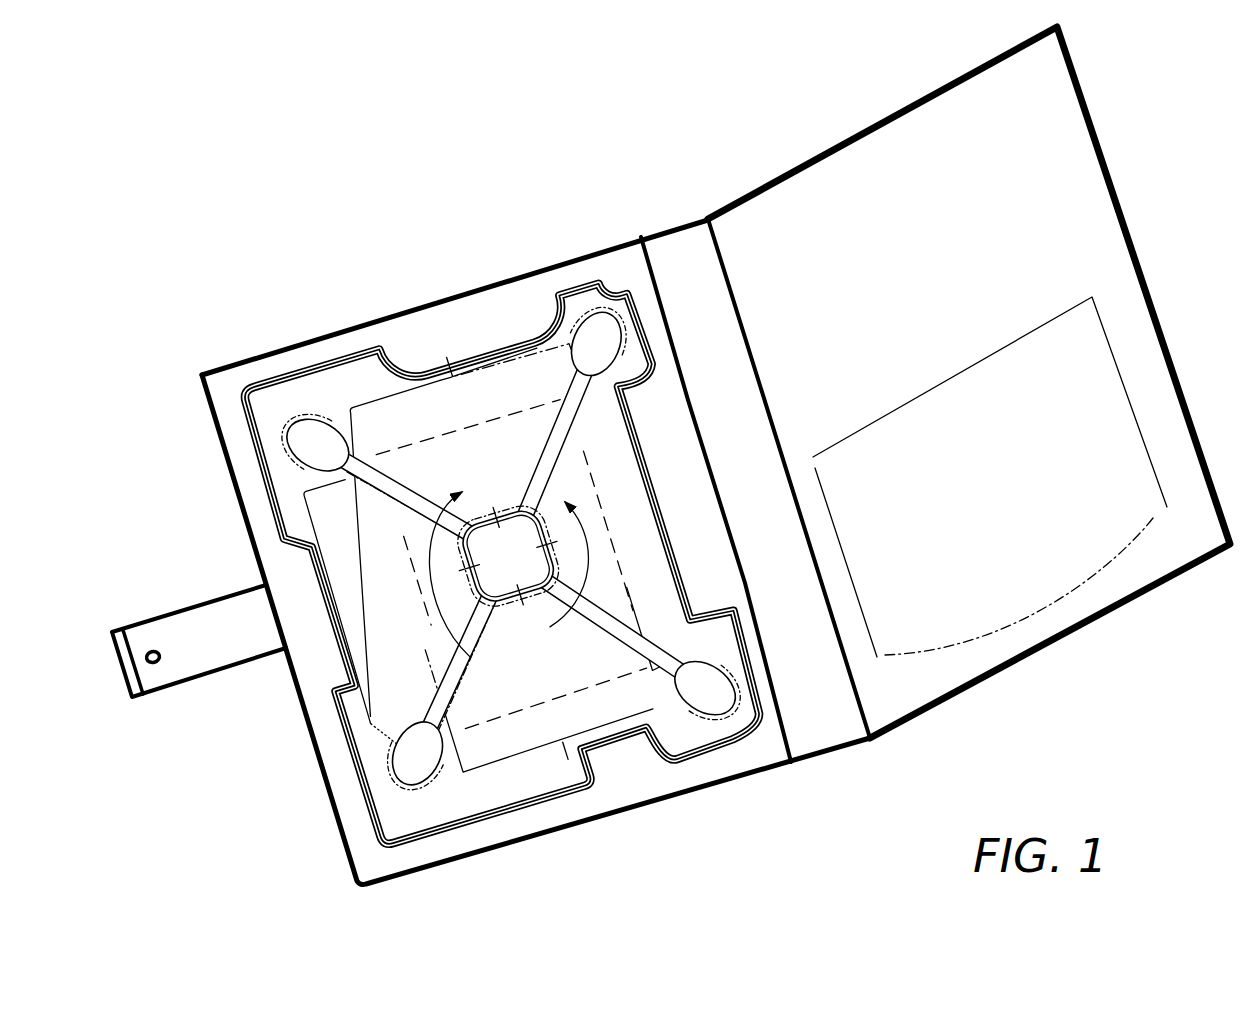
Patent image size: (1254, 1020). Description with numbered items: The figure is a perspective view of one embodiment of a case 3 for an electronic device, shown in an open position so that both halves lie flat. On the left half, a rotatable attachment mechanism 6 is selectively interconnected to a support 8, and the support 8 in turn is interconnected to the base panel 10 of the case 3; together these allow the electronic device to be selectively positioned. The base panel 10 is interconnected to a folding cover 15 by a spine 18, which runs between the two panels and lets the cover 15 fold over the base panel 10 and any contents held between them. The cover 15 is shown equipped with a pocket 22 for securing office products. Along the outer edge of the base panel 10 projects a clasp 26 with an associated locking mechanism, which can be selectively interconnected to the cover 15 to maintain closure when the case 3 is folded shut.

The case 3 is at (355, 208).
The rotatable attachment mechanism 6 is at (548, 812).
The support 8 is at (501, 456).
The base panel 10 is at (648, 784).
The folding cover 15 is at (1031, 658).
The spine 18 is at (821, 716).
The pocket 22 is at (1084, 400).
The clasp 26 is at (176, 676).